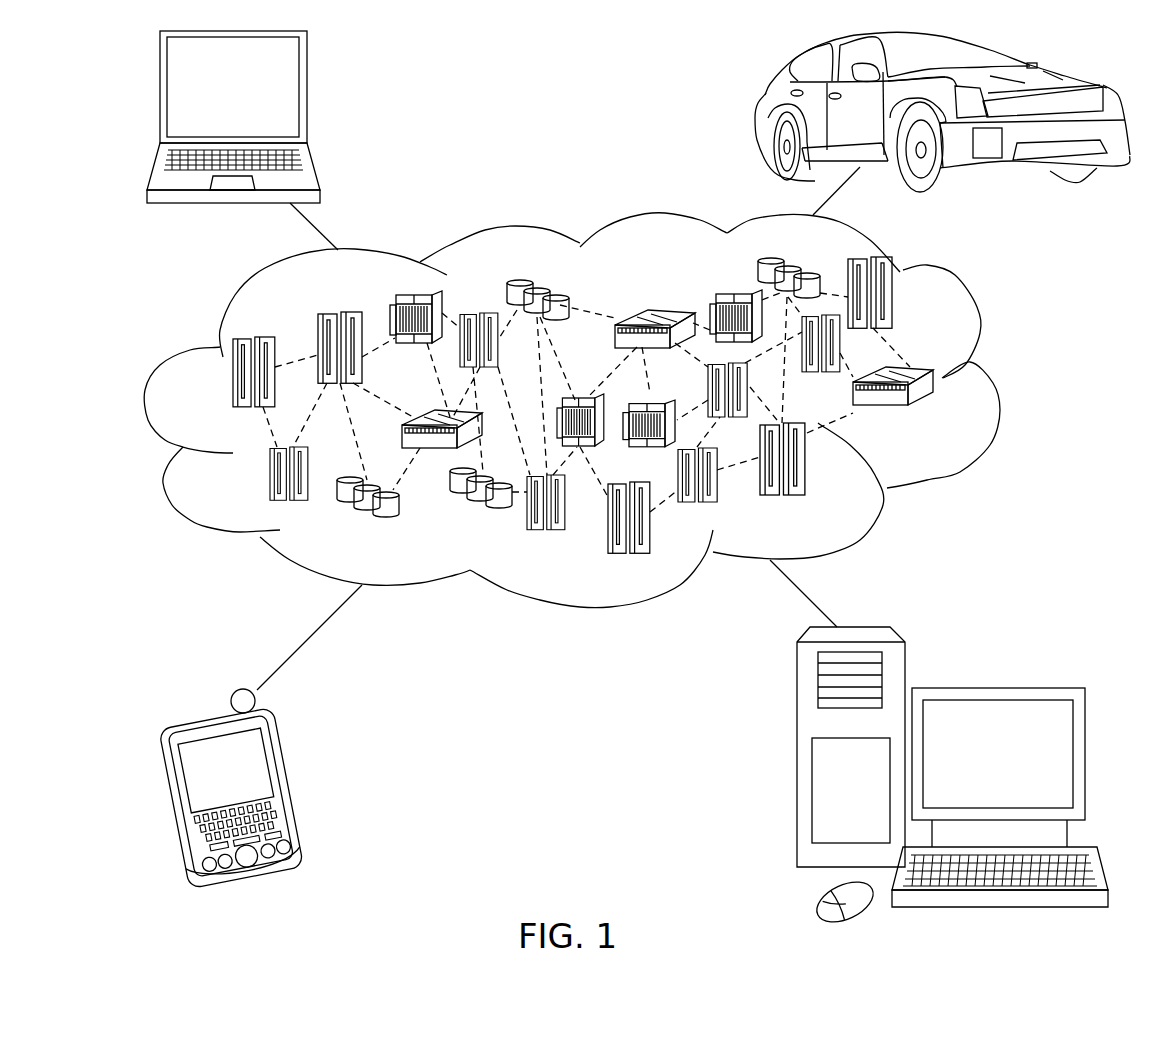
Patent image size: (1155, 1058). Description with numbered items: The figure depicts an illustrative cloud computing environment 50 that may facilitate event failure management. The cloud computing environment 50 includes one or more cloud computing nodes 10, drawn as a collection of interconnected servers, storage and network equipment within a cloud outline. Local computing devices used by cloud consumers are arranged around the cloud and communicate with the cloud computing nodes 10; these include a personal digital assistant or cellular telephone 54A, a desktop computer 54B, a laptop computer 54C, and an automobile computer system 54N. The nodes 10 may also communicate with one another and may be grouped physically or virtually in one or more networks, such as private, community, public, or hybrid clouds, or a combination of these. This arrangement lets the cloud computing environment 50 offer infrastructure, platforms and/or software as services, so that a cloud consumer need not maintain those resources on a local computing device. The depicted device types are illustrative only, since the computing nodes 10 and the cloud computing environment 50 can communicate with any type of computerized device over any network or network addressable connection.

The cloud computing node 10 is at (947, 424).
The cloud computing environment 50 is at (997, 383).
The personal digital assistant (PDA) or cellular telephone 54A is at (293, 787).
The desktop computer 54B is at (995, 688).
The laptop computer 54C is at (306, 95).
The automobile computer system 54N is at (768, 108).